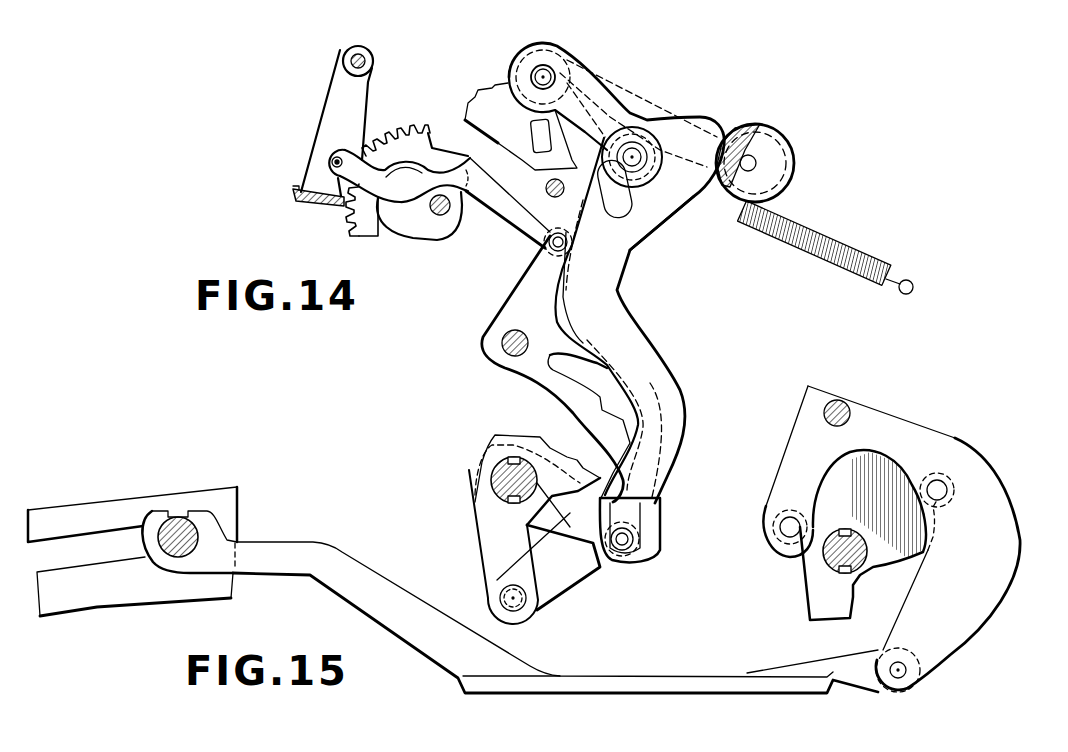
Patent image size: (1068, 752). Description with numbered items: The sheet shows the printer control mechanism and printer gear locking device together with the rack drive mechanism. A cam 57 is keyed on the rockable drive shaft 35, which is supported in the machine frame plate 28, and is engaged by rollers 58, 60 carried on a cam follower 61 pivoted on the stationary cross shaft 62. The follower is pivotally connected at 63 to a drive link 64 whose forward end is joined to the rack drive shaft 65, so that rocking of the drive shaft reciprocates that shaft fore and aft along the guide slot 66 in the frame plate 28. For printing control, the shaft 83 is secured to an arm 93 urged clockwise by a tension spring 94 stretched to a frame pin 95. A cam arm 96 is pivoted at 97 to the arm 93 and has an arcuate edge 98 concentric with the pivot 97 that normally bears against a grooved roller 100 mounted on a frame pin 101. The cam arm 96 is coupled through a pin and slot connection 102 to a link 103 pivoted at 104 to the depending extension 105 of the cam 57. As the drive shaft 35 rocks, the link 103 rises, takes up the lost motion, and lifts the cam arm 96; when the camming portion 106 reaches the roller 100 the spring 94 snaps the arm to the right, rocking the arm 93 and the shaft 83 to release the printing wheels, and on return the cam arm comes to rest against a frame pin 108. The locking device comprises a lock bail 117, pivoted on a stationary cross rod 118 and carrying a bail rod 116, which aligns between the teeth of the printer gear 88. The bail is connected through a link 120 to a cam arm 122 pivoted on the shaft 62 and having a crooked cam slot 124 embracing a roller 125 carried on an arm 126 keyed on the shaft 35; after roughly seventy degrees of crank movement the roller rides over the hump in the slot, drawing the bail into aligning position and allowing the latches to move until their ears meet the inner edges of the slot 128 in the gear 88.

In FIG. 14, the stationary cross rod 118 is at (366, 60).
In FIG. 14, the lock bail 117 is at (318, 208).
In FIG. 14, the bail rod 116 is at (331, 162).
In FIG. 14, the gear 88 is at (417, 133).
In FIG. 14, the slot 128 is at (406, 237).
In FIG. 14, the link 120 is at (500, 212).
In FIG. 14, the arm 93 is at (488, 135).
In FIG. 14, the shaft 83 is at (538, 152).
In FIG. 14, the frame pin 108 is at (553, 189).
In FIG. 14, the pivot 97 is at (548, 70).
In FIG. 14, the arcuate edge 98 is at (678, 213).
In FIG. 14, the cam arm 96 is at (677, 117).
In FIG. 14, the pin and slot connection 102 is at (640, 173).
In FIG. 14, the grooved roller 100 is at (758, 126).
In FIG. 14, the frame pin 101 is at (756, 163).
In FIG. 14, the tension spring 94 is at (815, 232).
In FIG. 14, the frame pin 95 is at (915, 284).
In FIG. 14, the camming portion 106 is at (572, 240).
In FIG. 14, the link 103 is at (612, 310).
In FIG. 14, the cam arm 122 is at (525, 298).
In FIG. 14, the stationary cross shaft 62 is at (500, 342).
In FIG. 15, the stationary cross shaft 62 is at (846, 408).
In FIG. 14, the cam slot 124 is at (565, 372).
In FIG. 14, the cam 57 is at (500, 432).
In FIG. 15, the cam 57 is at (882, 468).
In FIG. 14, the drive shaft 35 is at (491, 468).
In FIG. 15, the drive shaft 35 is at (830, 556).
In FIG. 14, the depending extension 105 is at (500, 546).
In FIG. 14, the pivot 104 is at (501, 598).
In FIG. 14, the arm 126 is at (553, 535).
In FIG. 14, the roller 125 is at (640, 532).
In FIG. 15, the guide slot 66 is at (108, 548).
In FIG. 15, the rack drive shaft 65 is at (197, 533).
In FIG. 15, the machine frame plate 28 is at (122, 604).
In FIG. 15, the drive link 64 is at (593, 657).
In FIG. 15, the cam follower 61 is at (945, 443).
In FIG. 15, the roller 60 is at (947, 480).
In FIG. 15, the roller 58 is at (778, 518).
In FIG. 15, the pivotal connection 63 is at (903, 672).